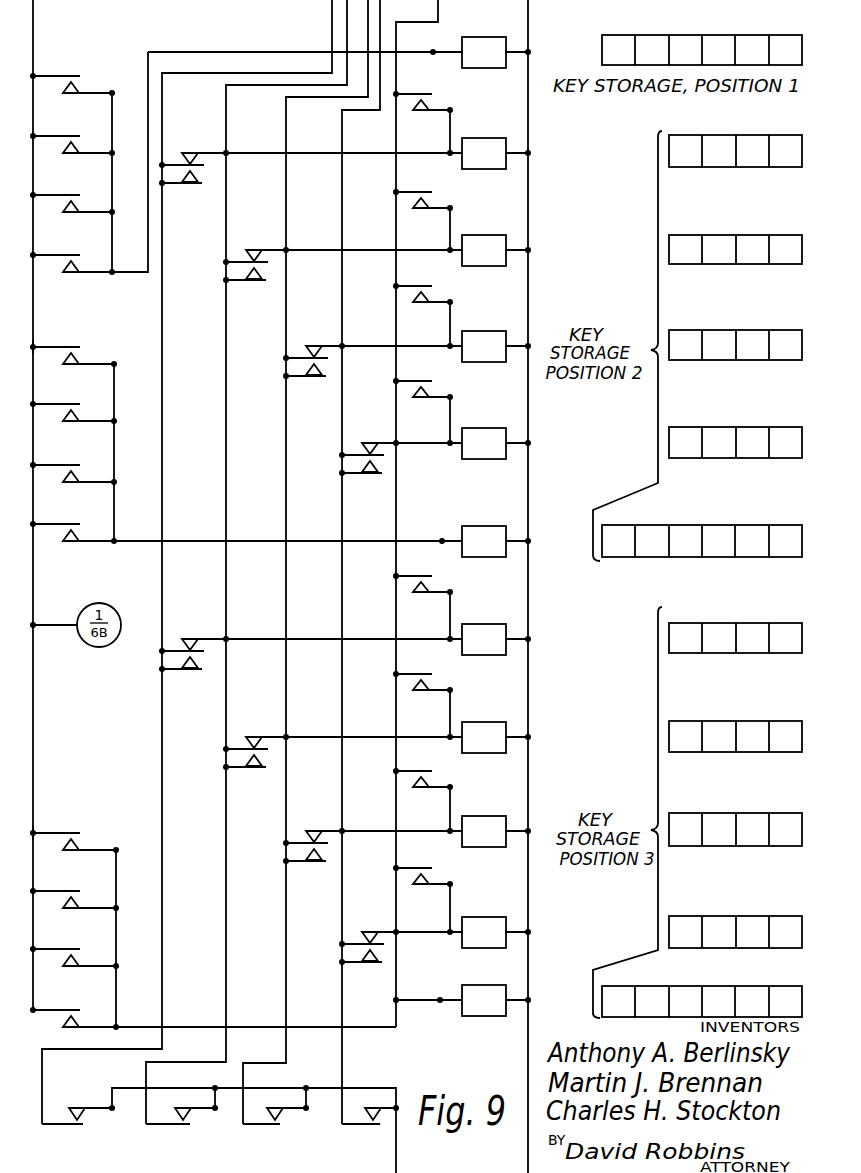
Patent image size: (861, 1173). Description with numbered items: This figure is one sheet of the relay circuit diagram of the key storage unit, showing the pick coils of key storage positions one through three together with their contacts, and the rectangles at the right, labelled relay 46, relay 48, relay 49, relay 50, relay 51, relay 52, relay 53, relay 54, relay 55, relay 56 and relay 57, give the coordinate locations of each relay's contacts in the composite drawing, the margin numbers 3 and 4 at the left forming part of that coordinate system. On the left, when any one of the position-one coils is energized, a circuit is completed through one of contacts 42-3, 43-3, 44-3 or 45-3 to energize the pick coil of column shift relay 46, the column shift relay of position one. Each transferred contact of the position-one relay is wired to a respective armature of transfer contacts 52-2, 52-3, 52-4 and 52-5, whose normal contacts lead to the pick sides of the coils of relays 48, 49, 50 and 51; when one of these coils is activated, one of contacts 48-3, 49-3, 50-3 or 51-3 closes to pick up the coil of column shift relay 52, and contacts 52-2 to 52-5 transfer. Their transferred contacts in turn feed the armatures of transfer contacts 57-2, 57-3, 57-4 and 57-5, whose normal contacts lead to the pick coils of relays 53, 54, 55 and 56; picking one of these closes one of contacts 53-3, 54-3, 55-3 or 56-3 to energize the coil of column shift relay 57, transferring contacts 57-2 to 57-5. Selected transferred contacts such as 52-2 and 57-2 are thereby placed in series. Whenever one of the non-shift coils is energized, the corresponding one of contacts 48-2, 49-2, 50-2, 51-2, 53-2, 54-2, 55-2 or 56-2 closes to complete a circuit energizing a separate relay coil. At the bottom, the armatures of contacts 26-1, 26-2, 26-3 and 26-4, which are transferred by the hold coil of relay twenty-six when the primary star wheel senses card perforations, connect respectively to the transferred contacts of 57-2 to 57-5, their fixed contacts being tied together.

The left-hand margin coordinate number 3 is at (22, 351).
The left-hand margin coordinate number 4 is at (22, 837).
The contact of relay 42 42-3 is at (97, 67).
The contact of relay 43 43-3 is at (97, 127).
The contact of relay 44 44-3 is at (97, 186).
The contact of relay 45 45-3 is at (97, 246).
The contact of relay 48 48-3 is at (97, 338).
The contact of relay 49 49-3 is at (97, 395).
The contact of relay 50 50-3 is at (73, 462).
The contact of relay 51 51-3 is at (97, 515).
The contact of relay 53 53-3 is at (97, 824).
The contact of relay 54 54-3 is at (97, 882).
The contact of relay 55 55-3 is at (97, 940).
The contact of relay 56 56-3 is at (97, 1001).
The transfer contact of column shift relay 52 52-2 is at (209, 195).
The transfer contact of column shift relay 52 52-3 is at (273, 292).
The transfer contact of column shift relay 52 52-4 is at (333, 388).
The transfer contact of column shift relay 52 52-5 is at (389, 485).
The transfer contact of column shift relay 57 57-2 is at (209, 681).
The transfer contact of column shift relay 57 57-3 is at (273, 779).
The transfer contact of column shift relay 57 57-4 is at (333, 873).
The transfer contact of column shift relay 57 57-5 is at (384, 914).
The contact of relay 48 48-2 is at (434, 98).
The contact of relay 49 49-2 is at (434, 196).
The contact of relay 50 50-2 is at (434, 290).
The contact of relay 51 51-2 is at (434, 385).
The contact of relay 53 53-2 is at (434, 580).
The contact of relay 54 54-2 is at (434, 678).
The contact of relay 55 55-2 is at (434, 775).
The contact of relay 56 56-2 is at (434, 872).
The contact of relay 26 26-1 is at (102, 1138).
The contact of relay 26 26-2 is at (192, 1116).
The contact of relay 26 26-3 is at (284, 1116).
The contact of relay 26 26-4 is at (382, 1116).
The column shift relay of key storage position 1 46 is at (475, 47).
The relay of key storage position 2 48 is at (492, 148).
The relay of key storage position 2 49 is at (524, 246).
The relay of key storage position 2 50 is at (554, 342).
The relay of key storage position 2 51 is at (582, 439).
The column shift relay of key storage position 2 52 is at (458, 536).
The relay of key storage position 3 53 is at (492, 634).
The relay of key storage position 3 54 is at (524, 732).
The relay of key storage position 3 55 is at (554, 826).
The relay of key storage position 3 56 is at (582, 928).
The column shift relay of key storage position 3 57 is at (597, 997).